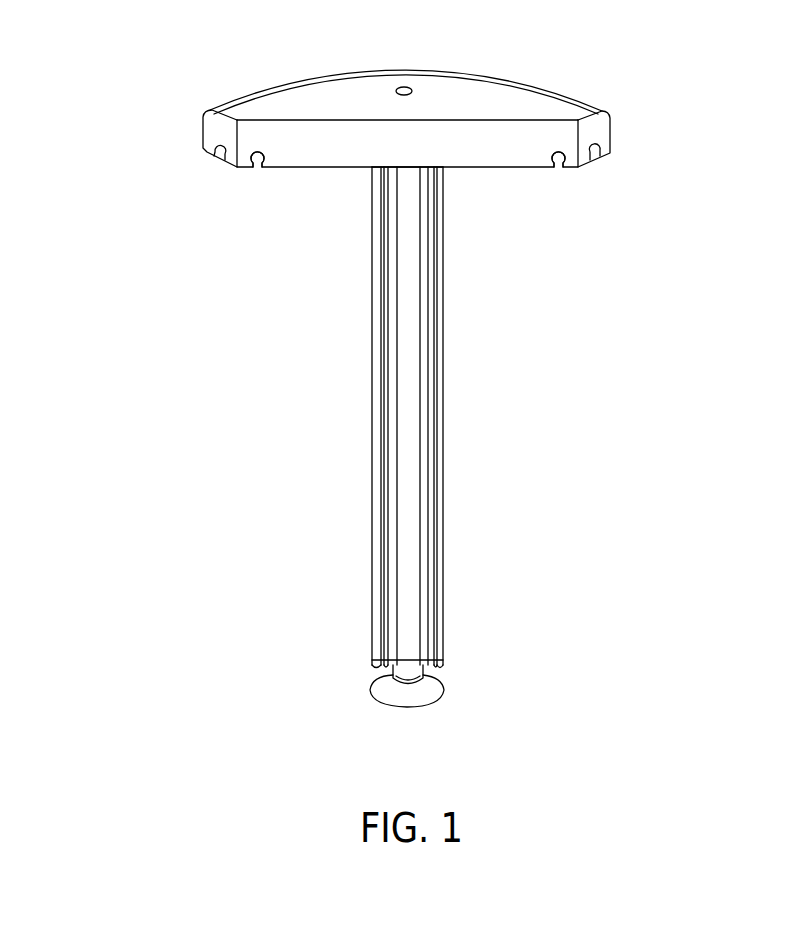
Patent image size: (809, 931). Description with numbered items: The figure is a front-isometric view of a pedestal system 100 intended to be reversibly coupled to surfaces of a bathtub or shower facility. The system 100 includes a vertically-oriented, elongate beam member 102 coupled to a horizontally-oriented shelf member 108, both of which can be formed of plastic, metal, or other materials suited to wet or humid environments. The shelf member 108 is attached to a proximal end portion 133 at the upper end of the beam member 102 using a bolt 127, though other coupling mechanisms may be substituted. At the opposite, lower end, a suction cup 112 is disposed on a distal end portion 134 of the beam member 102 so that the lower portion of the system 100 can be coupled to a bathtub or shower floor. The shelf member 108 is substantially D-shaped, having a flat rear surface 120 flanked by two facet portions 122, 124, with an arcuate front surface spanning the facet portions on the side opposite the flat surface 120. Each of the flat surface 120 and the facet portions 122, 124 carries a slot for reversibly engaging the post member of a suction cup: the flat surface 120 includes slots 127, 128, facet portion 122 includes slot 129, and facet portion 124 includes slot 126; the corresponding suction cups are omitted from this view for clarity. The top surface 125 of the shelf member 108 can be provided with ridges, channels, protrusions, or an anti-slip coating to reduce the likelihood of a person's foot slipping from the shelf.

The pedestal system 100 is at (751, 110).
The beam member 102 is at (445, 356).
The shelf member 108 is at (506, 77).
The suction cup 112 is at (444, 690).
The flat rear surface 120 is at (440, 151).
The facet portion 122 is at (600, 128).
The facet portion 124 is at (218, 128).
The top surface 125 is at (360, 110).
The slot 126 is at (213, 162).
The slot / bolt 127 is at (424, 87).
The slot 128 is at (558, 172).
The slot 129 is at (598, 163).
The proximal end portion 133 is at (365, 172).
The distal end portion 134 is at (496, 637).